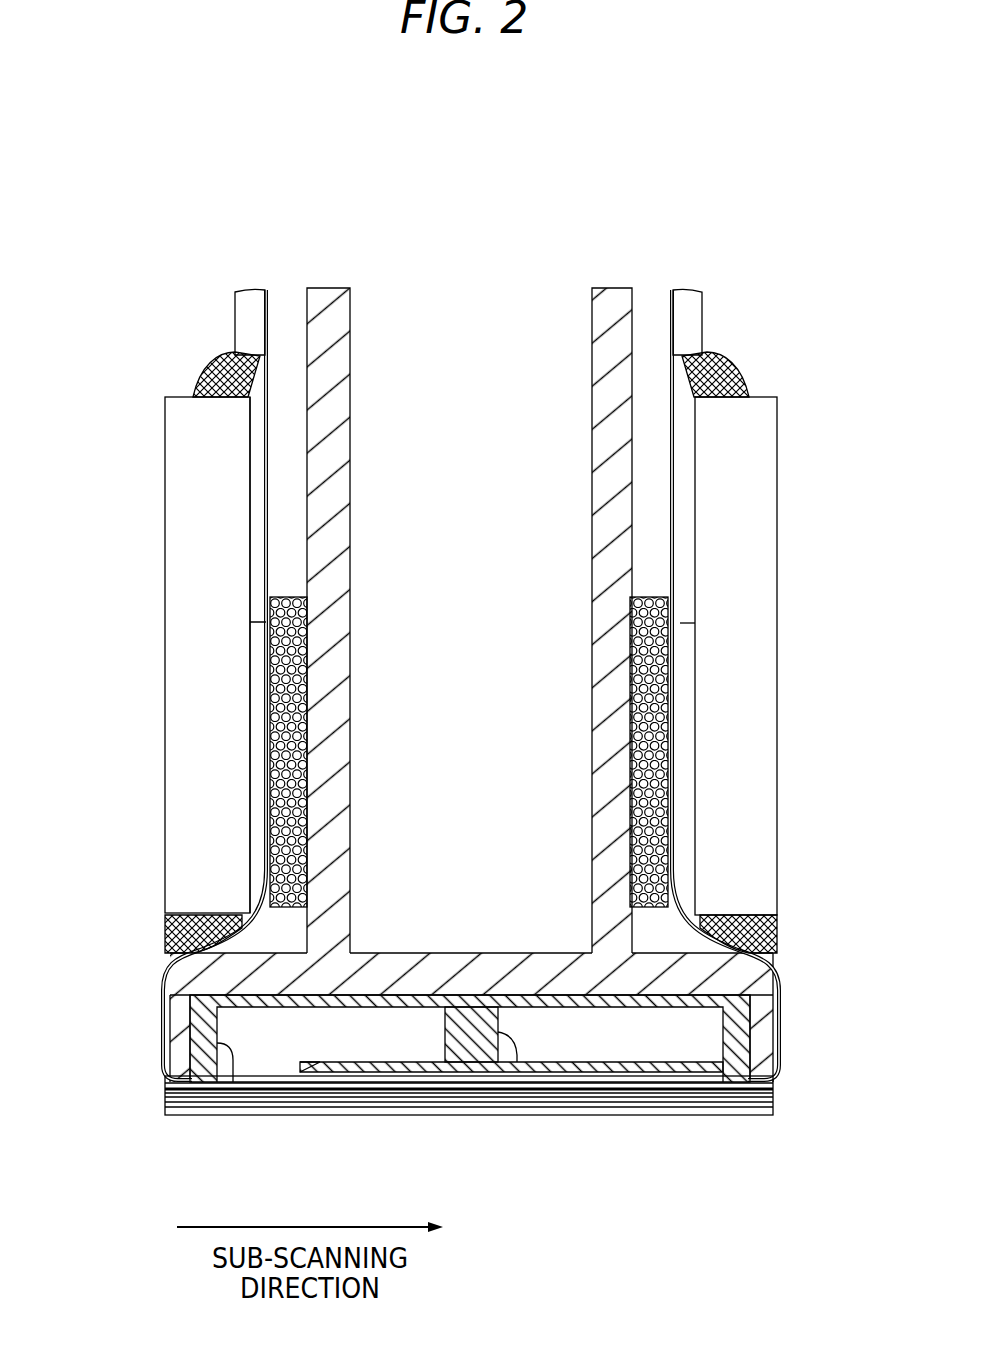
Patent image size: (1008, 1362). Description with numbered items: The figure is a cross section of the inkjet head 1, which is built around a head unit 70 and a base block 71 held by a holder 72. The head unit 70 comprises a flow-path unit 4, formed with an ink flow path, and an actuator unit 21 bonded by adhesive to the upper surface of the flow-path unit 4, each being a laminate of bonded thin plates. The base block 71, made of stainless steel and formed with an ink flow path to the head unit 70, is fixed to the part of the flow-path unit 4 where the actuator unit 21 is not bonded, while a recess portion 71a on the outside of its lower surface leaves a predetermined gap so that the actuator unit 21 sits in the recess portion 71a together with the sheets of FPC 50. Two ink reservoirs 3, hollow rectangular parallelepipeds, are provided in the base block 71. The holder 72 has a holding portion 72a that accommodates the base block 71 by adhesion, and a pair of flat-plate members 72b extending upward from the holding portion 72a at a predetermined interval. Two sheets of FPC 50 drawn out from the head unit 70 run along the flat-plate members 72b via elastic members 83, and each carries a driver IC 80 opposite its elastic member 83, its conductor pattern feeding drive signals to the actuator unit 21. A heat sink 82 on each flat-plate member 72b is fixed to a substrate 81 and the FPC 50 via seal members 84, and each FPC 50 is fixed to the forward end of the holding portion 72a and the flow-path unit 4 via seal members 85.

The inkjet head 1 is at (664, 210).
The ink reservoir 3 is at (230, 1045).
The flow-path unit 4 is at (660, 1114).
The actuator unit 21 is at (717, 1108).
The FPC 50 is at (163, 968).
The head unit 70 is at (469, 1174).
The base block 71 is at (416, 1089).
The recess portion 71a is at (340, 1080).
The holder 72 is at (471, 685).
The holding portion 72a is at (398, 953).
The flat-plate member 72b is at (337, 767).
The driver IC 80 is at (253, 677).
The substrate 81 is at (235, 320).
The heat sink 82 is at (165, 752).
The elastic member 83 is at (270, 600).
The seal member 84 is at (193, 377).
The seal member 85 is at (773, 1077).